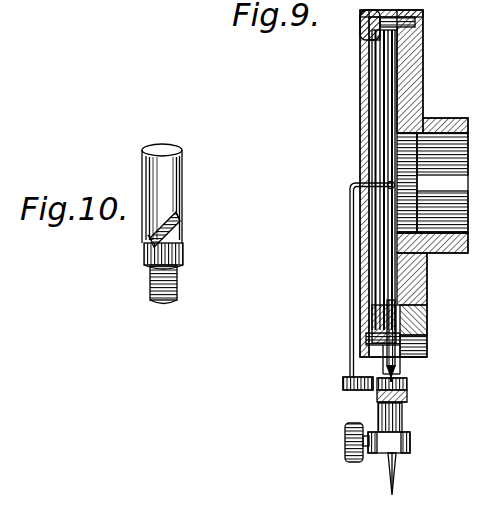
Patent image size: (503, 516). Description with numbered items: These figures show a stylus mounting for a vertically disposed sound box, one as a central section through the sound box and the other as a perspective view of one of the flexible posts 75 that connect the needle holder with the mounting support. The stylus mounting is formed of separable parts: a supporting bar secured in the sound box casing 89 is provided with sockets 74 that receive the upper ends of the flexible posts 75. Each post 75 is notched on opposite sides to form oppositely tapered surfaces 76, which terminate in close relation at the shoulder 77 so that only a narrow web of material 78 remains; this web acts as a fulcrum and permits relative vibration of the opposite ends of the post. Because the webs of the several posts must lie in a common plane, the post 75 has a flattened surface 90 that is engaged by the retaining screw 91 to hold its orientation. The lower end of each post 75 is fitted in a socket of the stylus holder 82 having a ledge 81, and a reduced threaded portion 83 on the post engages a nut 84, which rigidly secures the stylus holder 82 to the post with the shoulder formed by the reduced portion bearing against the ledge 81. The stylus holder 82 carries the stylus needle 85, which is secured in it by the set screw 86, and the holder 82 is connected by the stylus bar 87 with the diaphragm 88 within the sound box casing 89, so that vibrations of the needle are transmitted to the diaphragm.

In FIG. 9, the socket 74 is at (372, 346).
In FIG. 9, the flexible post 75 is at (357, 363).
In FIG. 10, the flexible post 75 is at (142, 162).
In FIG. 9, the oppositely tapered surface 76 is at (401, 365).
In FIG. 10, the oppositely tapered surface 76 is at (178, 213).
In FIG. 9, the shoulder 77 is at (408, 380).
In FIG. 10, the shoulder 77 is at (179, 233).
In FIG. 9, the narrow web of material 78 is at (401, 371).
In FIG. 10, the narrow web of material 78 is at (148, 237).
In FIG. 9, the ledge 81 is at (409, 387).
In FIG. 9, the stylus holder 82 is at (373, 389).
In FIG. 9, the reduced threaded portion 83 is at (404, 415).
In FIG. 10, the reduced threaded portion 83 is at (180, 283).
In FIG. 9, the nut 84 is at (371, 406).
In FIG. 9, the stylus needle 85 is at (398, 472).
In FIG. 9, the set screw 86 is at (345, 440).
In FIG. 9, the stylus bar 87 is at (350, 275).
In FIG. 9, the diaphragm 88 is at (388, 150).
In FIG. 9, the sound box casing 89 is at (361, 27).
In FIG. 9, the flattened surface 90 is at (428, 318).
In FIG. 10, the flattened surface 90 is at (176, 183).
In FIG. 9, the retaining screw 91 is at (428, 333).